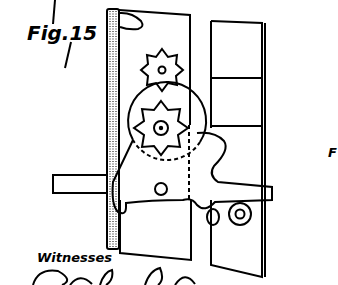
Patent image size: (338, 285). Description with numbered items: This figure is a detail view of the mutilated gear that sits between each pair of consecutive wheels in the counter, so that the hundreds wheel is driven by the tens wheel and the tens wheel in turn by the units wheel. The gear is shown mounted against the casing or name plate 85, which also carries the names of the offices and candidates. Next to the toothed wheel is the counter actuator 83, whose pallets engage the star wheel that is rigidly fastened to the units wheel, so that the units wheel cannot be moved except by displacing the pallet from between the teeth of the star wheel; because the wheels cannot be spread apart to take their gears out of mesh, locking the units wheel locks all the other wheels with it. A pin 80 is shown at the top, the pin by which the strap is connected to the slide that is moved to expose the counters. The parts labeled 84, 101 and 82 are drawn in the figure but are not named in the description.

The pin 80 is at (142, 27).
The casing or name plate 85 is at (107, 90).
The ratchet wheel 84 is at (195, 116).
The counter actuator 83 is at (156, 196).
The bottom plate 101 is at (118, 226).
The roller 82 is at (236, 221).